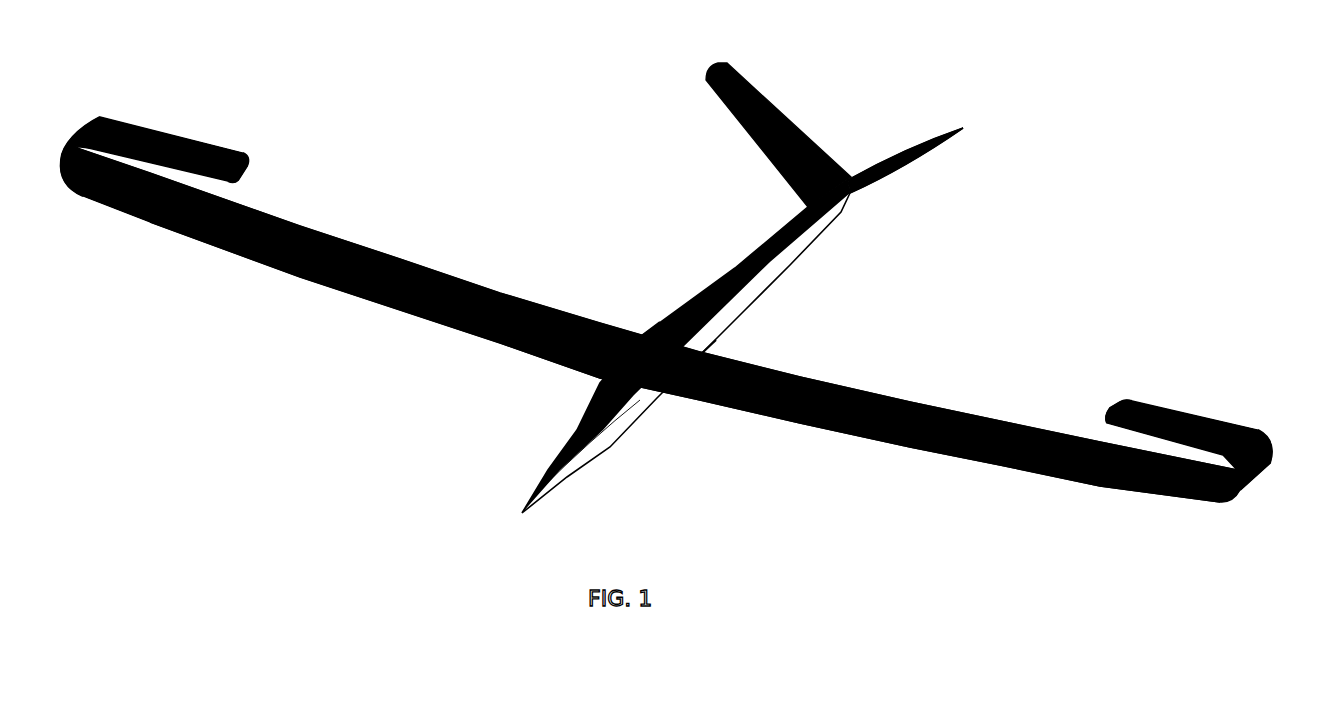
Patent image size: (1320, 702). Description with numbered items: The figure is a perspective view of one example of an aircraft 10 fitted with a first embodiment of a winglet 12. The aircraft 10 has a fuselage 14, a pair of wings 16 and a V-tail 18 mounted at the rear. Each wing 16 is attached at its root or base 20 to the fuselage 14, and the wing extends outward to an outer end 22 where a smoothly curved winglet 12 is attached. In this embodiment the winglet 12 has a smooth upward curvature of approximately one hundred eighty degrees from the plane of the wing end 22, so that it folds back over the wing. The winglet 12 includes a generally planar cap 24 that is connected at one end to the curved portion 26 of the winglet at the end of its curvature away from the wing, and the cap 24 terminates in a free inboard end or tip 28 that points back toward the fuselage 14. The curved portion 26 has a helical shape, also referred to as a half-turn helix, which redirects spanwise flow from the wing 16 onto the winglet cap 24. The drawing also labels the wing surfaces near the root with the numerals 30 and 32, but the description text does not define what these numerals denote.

The aircraft 10 is at (682, 316).
The winglet 12 is at (160, 107).
The fuselage 14 is at (548, 452).
The wing 16 is at (365, 233).
The V-tail 18 is at (750, 157).
The root or base 20 is at (630, 352).
The outer end of the wing 22 is at (82, 192).
The planar cap 24 is at (192, 128).
The curved portion 26 is at (75, 142).
The free inboard end or tip 28 is at (250, 156).
The lower wing edge 30 is at (347, 290).
The upper wing edge 32 is at (423, 270).